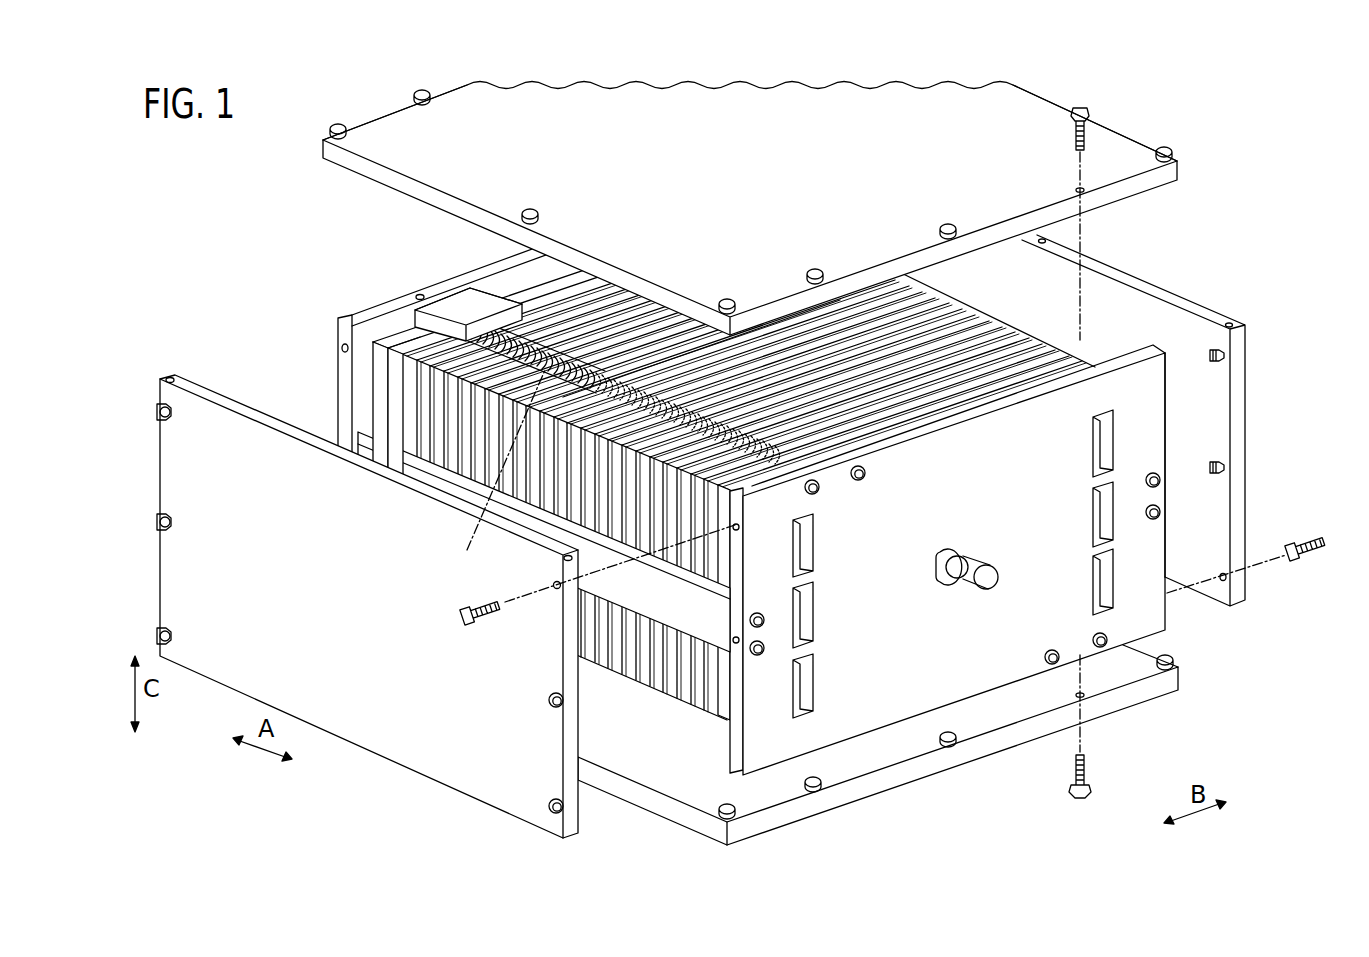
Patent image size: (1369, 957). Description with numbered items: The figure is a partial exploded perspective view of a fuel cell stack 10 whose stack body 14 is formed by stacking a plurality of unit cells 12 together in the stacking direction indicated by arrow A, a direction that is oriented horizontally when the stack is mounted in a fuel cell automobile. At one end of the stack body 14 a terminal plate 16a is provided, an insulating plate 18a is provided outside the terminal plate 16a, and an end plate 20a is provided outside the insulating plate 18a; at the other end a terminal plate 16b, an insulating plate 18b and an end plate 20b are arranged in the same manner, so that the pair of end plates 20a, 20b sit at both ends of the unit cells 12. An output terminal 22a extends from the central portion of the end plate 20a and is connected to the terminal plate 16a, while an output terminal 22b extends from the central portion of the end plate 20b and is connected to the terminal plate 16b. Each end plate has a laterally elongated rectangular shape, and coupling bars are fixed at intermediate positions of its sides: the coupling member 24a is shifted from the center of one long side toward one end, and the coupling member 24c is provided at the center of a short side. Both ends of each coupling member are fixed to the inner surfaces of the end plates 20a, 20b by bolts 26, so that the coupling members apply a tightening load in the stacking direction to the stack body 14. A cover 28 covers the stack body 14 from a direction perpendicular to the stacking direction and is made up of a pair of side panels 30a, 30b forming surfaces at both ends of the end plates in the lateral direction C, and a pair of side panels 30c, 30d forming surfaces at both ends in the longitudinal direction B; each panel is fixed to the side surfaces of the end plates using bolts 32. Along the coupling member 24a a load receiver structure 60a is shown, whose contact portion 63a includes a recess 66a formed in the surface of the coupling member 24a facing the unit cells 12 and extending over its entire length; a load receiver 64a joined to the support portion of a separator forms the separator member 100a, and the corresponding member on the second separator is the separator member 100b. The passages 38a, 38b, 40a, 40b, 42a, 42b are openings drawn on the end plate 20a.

The fuel cell stack 10 is at (207, 161).
The unit cells 12 is at (992, 288).
The stack body 14 is at (1053, 330).
The terminal plate 16a is at (700, 716).
The terminal plate 16b is at (393, 377).
The insulating plate 18a is at (722, 740).
The insulating plate 18b is at (389, 346).
The end plate 20a is at (898, 708).
The end plate 20b is at (345, 316).
The output terminal 22a is at (985, 590).
The output terminal 22b is at (496, 475).
The coupling member 24a is at (467, 297).
The coupling member 24c is at (411, 468).
The bolts 26 is at (860, 480).
The cover 28 is at (1137, 136).
The side panel 30a is at (1163, 185).
The side panel 30b is at (995, 743).
The side panel 30c is at (480, 790).
The side panel 30d is at (1240, 397).
The bolts 32 is at (1088, 112).
The oxygen-containing gas supply passage 38a is at (815, 549).
The oxygen-containing gas discharge passage 38b is at (1098, 582).
The coolant supply passage 40a is at (815, 622).
The coolant discharge passage 40b is at (1098, 518).
The fuel gas supply passage 42a is at (1098, 447).
The fuel gas discharge passage 42b is at (815, 690).
The load receiver structure 60a is at (462, 308).
The contact portion 63a is at (392, 356).
The load receiver 64a is at (577, 360).
The recess 66a is at (530, 322).
The separator member 100a is at (597, 372).
The separator member 100b is at (688, 418).